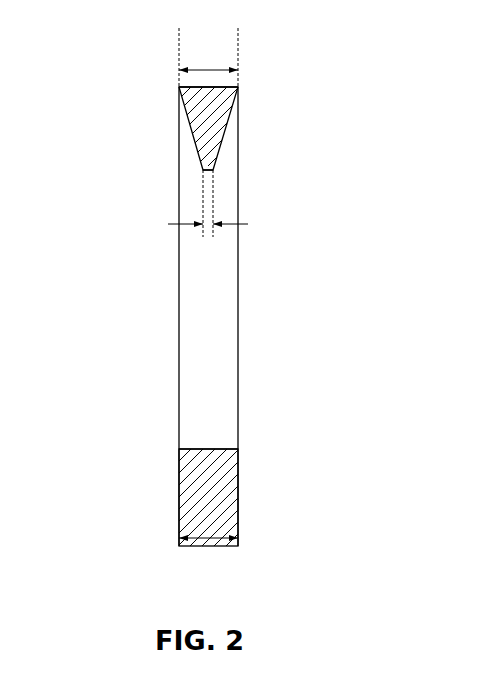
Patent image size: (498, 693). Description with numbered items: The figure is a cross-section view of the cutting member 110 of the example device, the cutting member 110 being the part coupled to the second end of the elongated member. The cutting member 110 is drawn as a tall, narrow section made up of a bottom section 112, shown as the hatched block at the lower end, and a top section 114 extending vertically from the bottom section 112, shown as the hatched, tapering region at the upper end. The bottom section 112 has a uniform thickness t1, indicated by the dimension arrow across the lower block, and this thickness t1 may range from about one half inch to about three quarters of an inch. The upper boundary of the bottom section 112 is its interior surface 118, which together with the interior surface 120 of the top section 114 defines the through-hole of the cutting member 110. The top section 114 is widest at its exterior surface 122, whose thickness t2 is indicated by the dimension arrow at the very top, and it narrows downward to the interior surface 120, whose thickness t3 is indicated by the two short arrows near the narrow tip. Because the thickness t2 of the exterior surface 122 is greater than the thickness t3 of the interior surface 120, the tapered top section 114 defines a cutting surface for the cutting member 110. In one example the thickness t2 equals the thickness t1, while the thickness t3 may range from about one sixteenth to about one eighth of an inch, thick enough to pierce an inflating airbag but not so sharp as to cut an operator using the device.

The cutting member 110 is at (167, 312).
The bottom section 112 is at (179, 475).
The top section 114 is at (196, 136).
The interior surface of the bottom section 118 is at (218, 449).
The interior surface of the top section 120 is at (211, 171).
The exterior surface of the top section 122 is at (179, 87).
The thickness of the bottom section t1 is at (212, 541).
The thickness of the exterior surface of the top section t2 is at (205, 68).
The thickness of the interior surface of the top section t3 is at (228, 226).